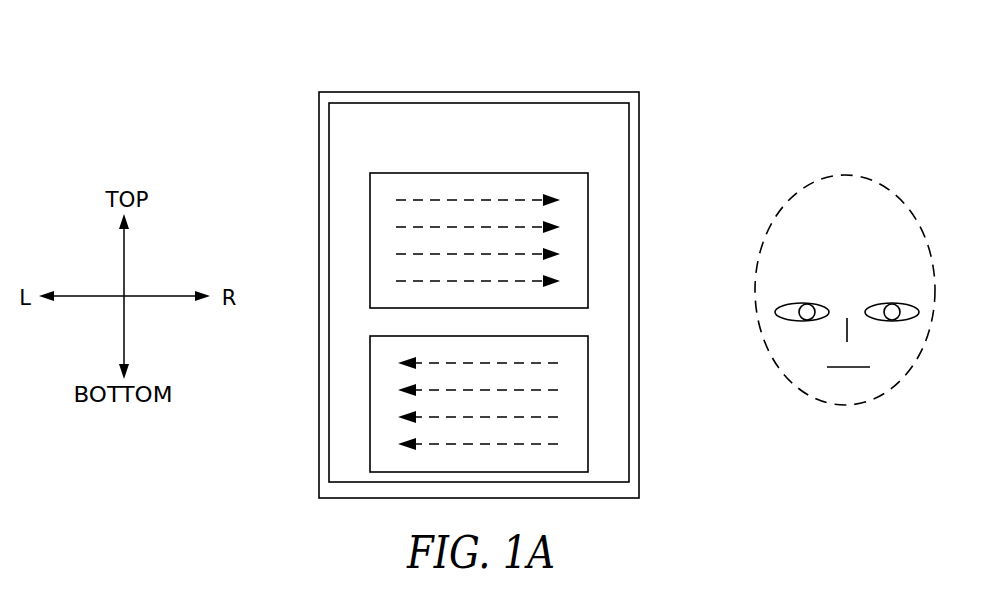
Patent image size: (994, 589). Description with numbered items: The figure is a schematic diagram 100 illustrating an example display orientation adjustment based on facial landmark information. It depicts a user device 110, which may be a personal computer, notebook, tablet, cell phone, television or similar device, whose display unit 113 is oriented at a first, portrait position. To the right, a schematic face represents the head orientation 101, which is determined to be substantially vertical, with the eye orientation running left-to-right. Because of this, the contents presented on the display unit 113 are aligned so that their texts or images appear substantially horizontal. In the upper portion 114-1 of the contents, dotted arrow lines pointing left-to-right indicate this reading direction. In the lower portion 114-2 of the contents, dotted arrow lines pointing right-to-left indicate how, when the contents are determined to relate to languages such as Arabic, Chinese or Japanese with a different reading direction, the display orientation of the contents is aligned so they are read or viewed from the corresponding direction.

The schematic diagram 100 is at (680, 62).
The user device 110 is at (319, 182).
The display unit 113 is at (556, 293).
The upper portion of the contents 114-1 is at (590, 243).
The lower portion of the contents 114-2 is at (590, 372).
The head orientation 101 is at (845, 290).